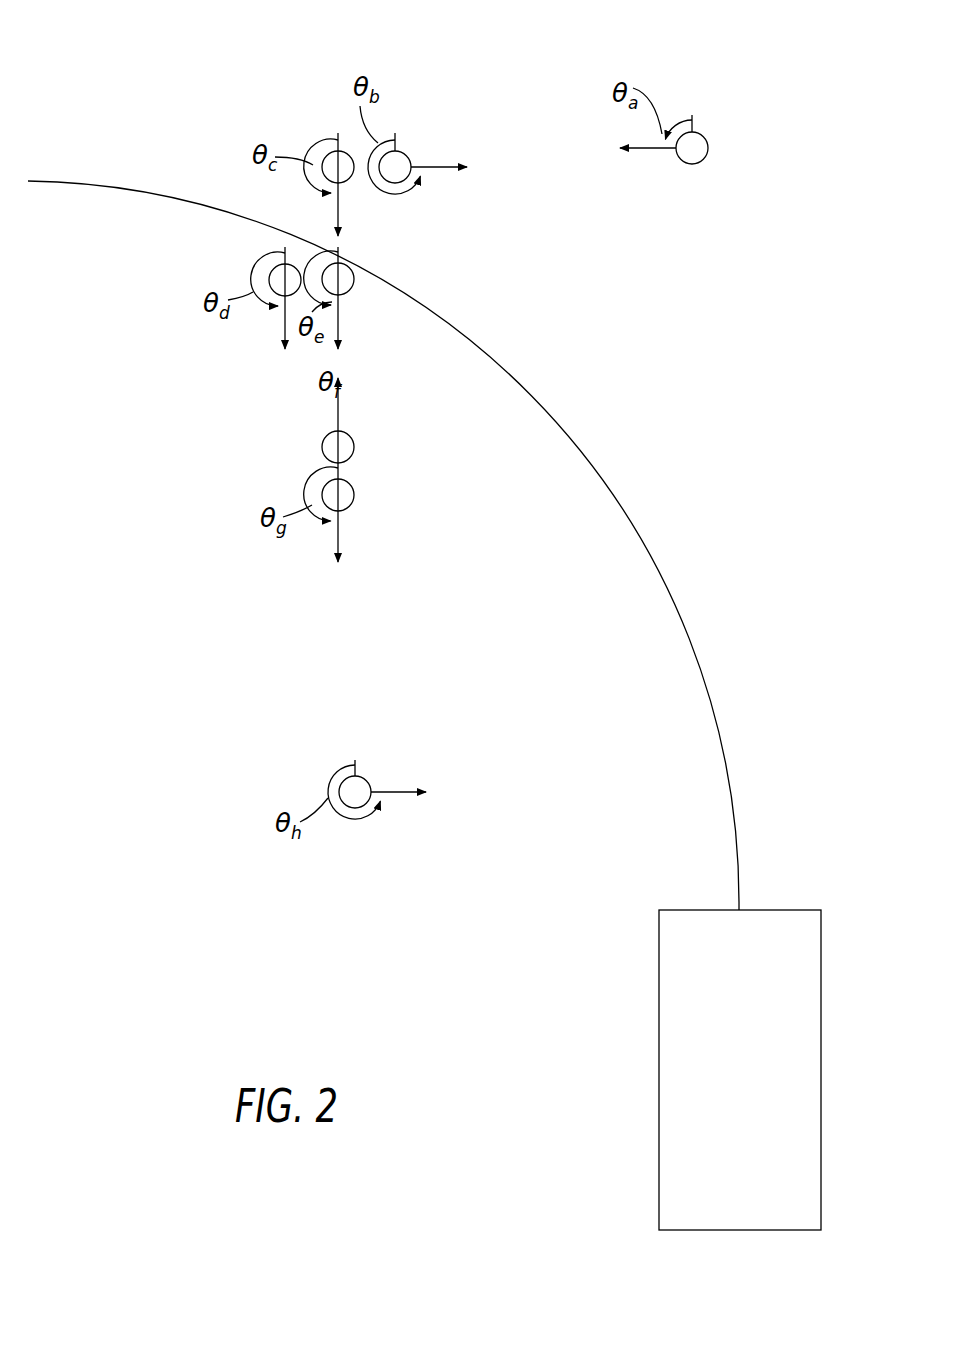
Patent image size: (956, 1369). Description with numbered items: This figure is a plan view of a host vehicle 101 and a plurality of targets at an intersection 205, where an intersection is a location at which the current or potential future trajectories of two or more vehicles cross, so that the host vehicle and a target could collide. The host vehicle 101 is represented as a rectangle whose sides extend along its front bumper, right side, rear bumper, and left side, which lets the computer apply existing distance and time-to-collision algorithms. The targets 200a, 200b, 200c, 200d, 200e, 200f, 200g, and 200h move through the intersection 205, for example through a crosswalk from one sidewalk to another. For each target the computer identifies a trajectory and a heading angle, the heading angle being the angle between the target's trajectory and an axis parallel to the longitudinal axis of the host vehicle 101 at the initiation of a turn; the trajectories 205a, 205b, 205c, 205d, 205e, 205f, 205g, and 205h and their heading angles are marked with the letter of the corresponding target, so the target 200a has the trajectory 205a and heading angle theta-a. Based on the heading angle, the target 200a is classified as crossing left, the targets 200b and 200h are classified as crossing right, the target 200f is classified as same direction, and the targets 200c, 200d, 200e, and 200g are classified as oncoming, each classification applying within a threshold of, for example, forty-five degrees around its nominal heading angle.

The host vehicle 101 is at (822, 953).
The intersection 205 is at (144, 74).
The target 200a is at (700, 133).
The target 200b is at (410, 150).
The target 200c is at (330, 150).
The target 200d is at (273, 253).
The target 200e is at (357, 285).
The target 200f is at (348, 433).
The target 200g is at (347, 482).
The target 200h is at (367, 778).
The trajectory 205a is at (645, 150).
The trajectory 205b is at (437, 170).
The trajectory 205c is at (335, 215).
The trajectory 205d is at (280, 325).
The trajectory 205e is at (343, 323).
The trajectory 205f is at (337, 407).
The trajectory 205g is at (342, 537).
The trajectory 205h is at (402, 795).